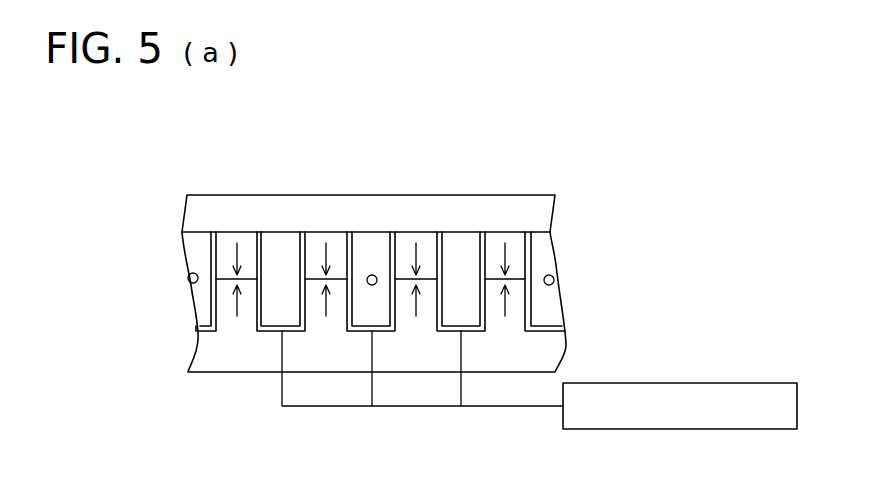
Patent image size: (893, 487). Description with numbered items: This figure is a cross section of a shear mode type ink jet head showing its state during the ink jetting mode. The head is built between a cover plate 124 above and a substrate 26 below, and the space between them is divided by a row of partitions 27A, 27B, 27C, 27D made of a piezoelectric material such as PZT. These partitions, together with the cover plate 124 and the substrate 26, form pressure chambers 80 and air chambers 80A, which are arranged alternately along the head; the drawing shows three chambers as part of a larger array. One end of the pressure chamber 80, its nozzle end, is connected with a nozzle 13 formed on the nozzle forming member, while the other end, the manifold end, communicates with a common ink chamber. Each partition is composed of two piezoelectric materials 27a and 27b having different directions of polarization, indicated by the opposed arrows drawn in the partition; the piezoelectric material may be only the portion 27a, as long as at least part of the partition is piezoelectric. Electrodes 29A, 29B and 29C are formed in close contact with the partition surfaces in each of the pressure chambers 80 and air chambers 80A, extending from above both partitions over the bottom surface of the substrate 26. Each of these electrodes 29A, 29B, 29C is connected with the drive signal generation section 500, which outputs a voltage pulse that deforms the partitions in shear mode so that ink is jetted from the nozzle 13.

The cover plate 124 is at (213, 194).
The partition 27A is at (233, 239).
The partition 27B is at (327, 239).
The partition 27C is at (416, 240).
The partition 27D is at (557, 220).
The piezoelectric material 27a is at (520, 253).
The piezoelectric material 27b is at (520, 301).
The electrode 29A is at (265, 242).
The electrode 29B is at (373, 251).
The electrode 29C is at (447, 239).
The air chamber 80A is at (282, 318).
The pressure chamber 80 is at (380, 319).
The nozzle 13 is at (372, 287).
The substrate 26 is at (198, 372).
The drive signal generation section 500 is at (691, 383).